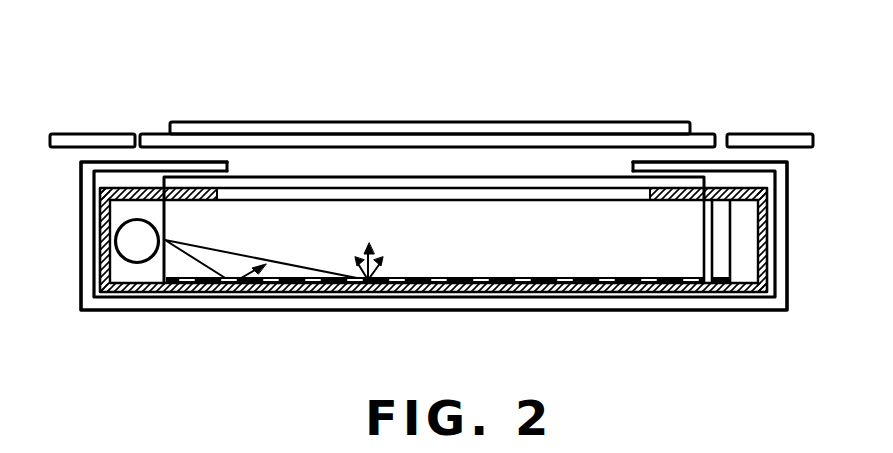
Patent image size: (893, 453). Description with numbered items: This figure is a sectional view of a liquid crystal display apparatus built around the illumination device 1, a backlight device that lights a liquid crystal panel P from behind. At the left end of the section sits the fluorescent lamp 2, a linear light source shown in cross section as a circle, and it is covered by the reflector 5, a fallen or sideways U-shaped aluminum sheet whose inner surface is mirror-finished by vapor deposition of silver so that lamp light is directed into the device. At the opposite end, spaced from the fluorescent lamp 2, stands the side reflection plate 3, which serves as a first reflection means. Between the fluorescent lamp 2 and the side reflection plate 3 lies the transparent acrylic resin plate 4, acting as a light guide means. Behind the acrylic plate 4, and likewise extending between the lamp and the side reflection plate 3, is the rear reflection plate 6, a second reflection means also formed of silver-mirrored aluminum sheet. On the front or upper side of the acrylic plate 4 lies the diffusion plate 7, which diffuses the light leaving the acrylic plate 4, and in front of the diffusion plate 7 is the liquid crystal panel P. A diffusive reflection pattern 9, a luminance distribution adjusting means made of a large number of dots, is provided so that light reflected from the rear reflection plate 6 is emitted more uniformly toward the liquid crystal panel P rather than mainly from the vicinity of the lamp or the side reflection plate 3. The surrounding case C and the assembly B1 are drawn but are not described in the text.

The illumination device 1 is at (800, 214).
The fluorescent lamp 2 is at (132, 245).
The side reflection plate 3 is at (718, 252).
The transparent acrylic resin plate 4 is at (438, 255).
The reflector 5 is at (112, 298).
The rear reflection plate 6 is at (302, 294).
The diffusion plate 7 is at (387, 183).
The diffusive reflection pattern 9 is at (480, 297).
The case C is at (86, 197).
The liquid crystal panel P is at (317, 138).
The backlight B1 is at (765, 52).